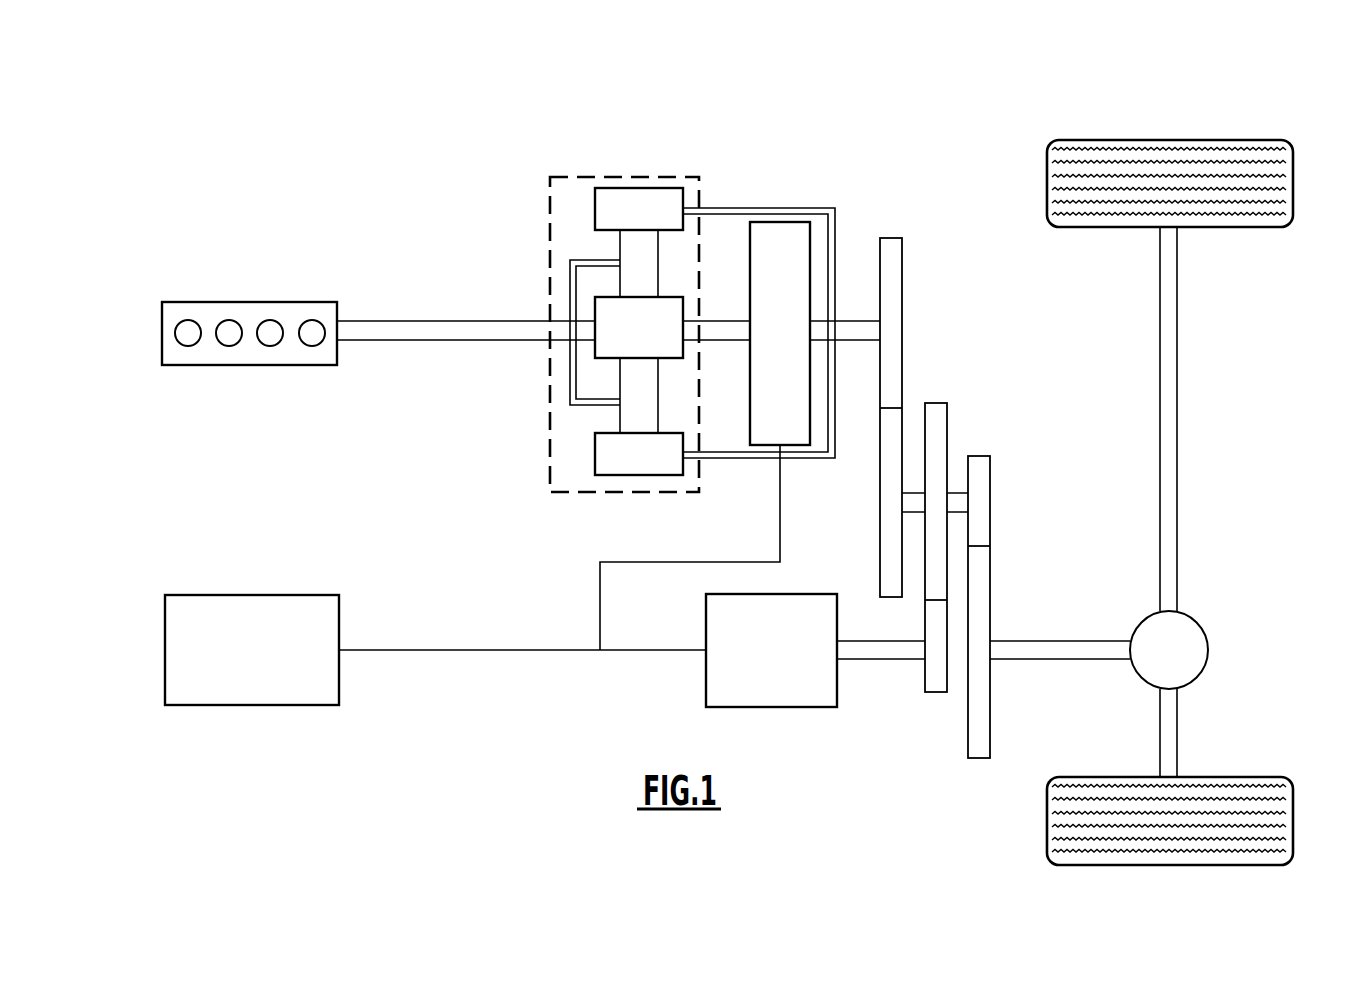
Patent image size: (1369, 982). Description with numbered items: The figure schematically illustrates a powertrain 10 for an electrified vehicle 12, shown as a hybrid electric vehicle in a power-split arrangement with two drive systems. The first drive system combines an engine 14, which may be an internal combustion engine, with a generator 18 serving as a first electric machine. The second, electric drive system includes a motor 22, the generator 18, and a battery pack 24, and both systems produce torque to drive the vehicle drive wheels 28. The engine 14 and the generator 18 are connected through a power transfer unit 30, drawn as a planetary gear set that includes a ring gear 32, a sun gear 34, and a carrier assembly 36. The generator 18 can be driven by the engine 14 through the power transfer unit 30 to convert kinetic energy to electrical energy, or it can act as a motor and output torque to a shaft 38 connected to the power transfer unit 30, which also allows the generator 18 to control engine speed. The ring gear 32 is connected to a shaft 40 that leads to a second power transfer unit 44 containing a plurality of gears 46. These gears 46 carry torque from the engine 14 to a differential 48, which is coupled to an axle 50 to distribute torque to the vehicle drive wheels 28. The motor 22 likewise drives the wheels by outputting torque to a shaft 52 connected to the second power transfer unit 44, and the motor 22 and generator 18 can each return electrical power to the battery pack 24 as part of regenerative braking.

The powertrain 10 is at (392, 200).
The electrified vehicle 12 is at (808, 134).
The engine 14 is at (182, 302).
The generator 18 is at (758, 222).
The motor 22 is at (838, 690).
The battery pack 24 is at (183, 595).
The vehicle drive wheels 28 is at (1152, 140).
The power transfer unit 30 is at (548, 452).
The ring gear 32 is at (595, 208).
The sun gear 34 is at (595, 303).
The carrier assembly 36 is at (570, 392).
The shaft 38 is at (713, 320).
The shaft 40 is at (857, 320).
The second power transfer unit 44 is at (978, 362).
The gears 46 is at (902, 370).
The differential 48 is at (1200, 668).
The axle 50 is at (1178, 410).
The shaft 52 is at (893, 660).